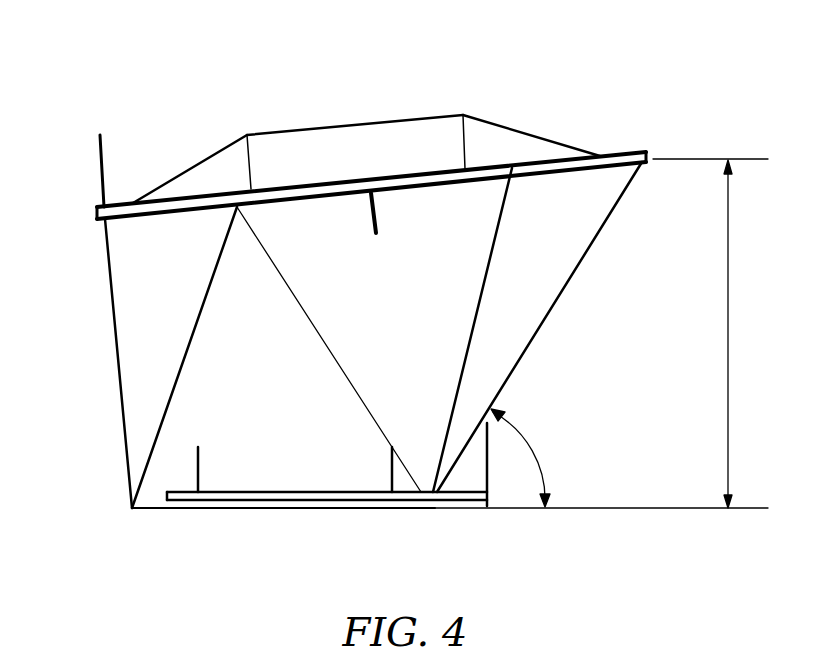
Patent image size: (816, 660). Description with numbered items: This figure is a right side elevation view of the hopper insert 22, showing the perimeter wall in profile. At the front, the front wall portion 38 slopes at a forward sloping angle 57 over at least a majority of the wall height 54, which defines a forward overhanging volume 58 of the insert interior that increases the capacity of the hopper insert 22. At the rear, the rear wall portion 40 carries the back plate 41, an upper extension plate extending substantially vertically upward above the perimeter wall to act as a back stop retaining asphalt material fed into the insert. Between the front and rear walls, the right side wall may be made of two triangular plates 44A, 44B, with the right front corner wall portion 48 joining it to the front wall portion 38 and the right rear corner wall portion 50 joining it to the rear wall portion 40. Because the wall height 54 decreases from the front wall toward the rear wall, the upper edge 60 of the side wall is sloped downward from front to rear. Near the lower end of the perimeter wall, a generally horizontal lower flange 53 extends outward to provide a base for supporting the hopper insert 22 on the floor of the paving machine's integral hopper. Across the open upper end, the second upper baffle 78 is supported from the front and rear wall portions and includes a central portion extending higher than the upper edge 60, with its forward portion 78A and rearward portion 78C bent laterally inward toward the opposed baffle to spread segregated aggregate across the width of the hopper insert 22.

The hopper insert 22 is at (406, 290).
The front wall portion 38 is at (557, 308).
The rear wall portion 40 is at (108, 293).
The back plate 41 is at (100, 167).
The triangular plate 44A is at (198, 423).
The triangular plate 44B is at (363, 343).
The right front corner wall portion 48 is at (500, 345).
The right rear corner wall portion 50 is at (145, 363).
The lower flange 53 is at (468, 500).
The wall height 54 is at (728, 318).
The forward sloping angle 57 is at (537, 448).
The forward overhanging volume 58 is at (607, 187).
The upper edge 60 is at (312, 187).
The second upper baffle 78 is at (328, 140).
The forward portion 78A is at (513, 142).
The rearward portion 78C is at (190, 166).